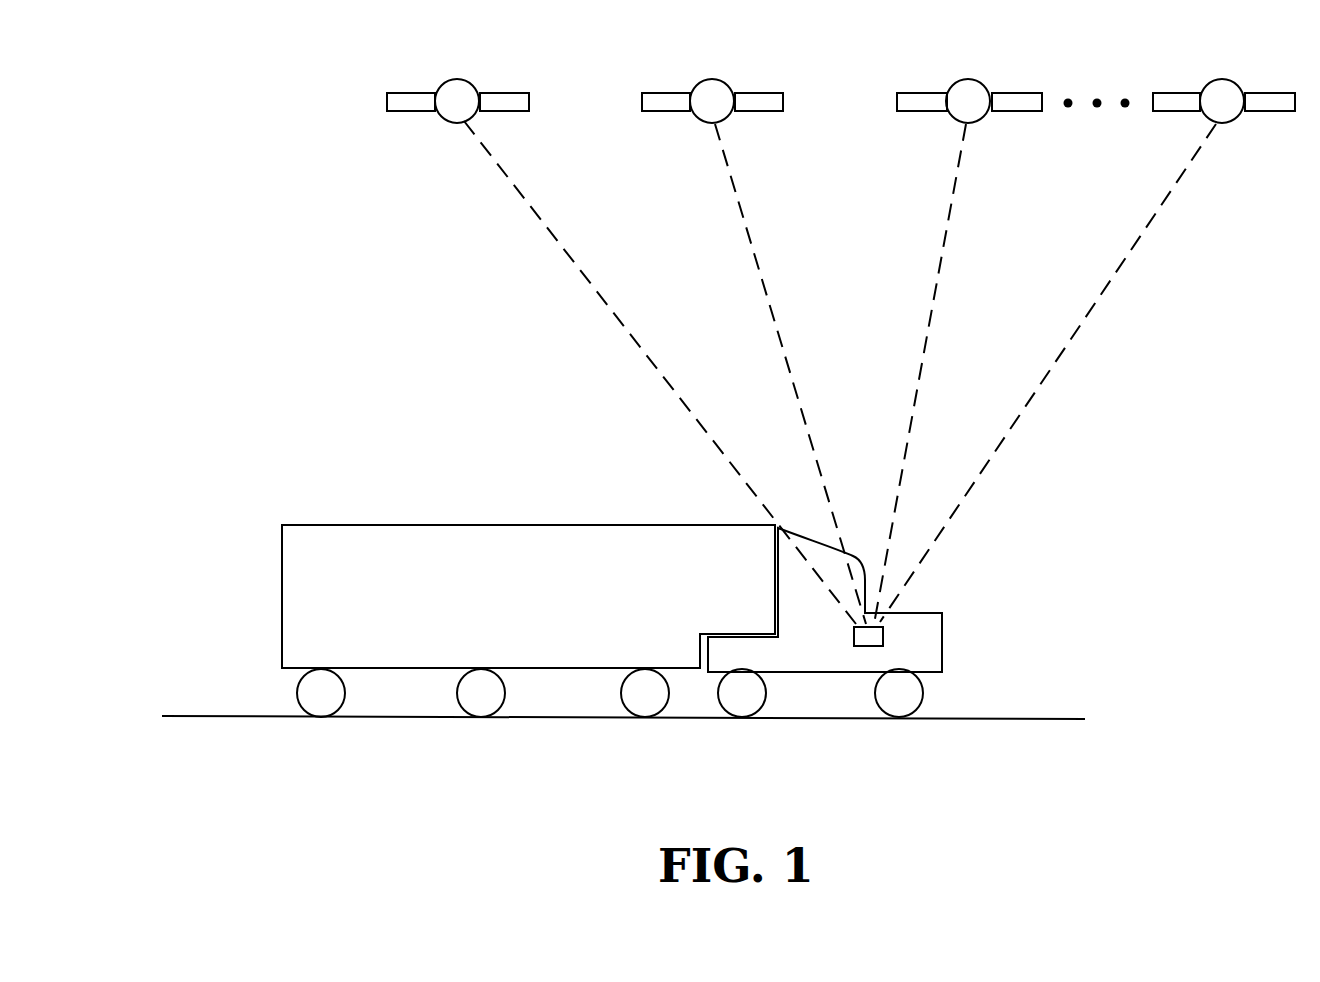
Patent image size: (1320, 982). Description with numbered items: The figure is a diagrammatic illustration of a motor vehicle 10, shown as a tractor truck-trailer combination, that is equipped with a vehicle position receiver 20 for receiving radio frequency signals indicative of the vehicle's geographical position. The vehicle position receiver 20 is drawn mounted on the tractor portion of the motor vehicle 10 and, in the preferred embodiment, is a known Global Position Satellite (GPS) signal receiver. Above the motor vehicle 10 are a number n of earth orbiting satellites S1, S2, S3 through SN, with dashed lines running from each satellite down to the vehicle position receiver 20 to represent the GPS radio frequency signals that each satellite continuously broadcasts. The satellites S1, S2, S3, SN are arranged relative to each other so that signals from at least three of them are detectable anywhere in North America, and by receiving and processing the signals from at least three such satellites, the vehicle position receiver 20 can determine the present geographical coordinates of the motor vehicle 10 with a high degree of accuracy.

The motor vehicle 10 is at (384, 466).
The vehicle position receiver 20 is at (884, 636).
The earth orbiting satellite S1 is at (458, 83).
The earth orbiting satellite S2 is at (712, 83).
The earth orbiting satellite S3 is at (969, 83).
The earth orbiting satellite SN is at (1224, 83).